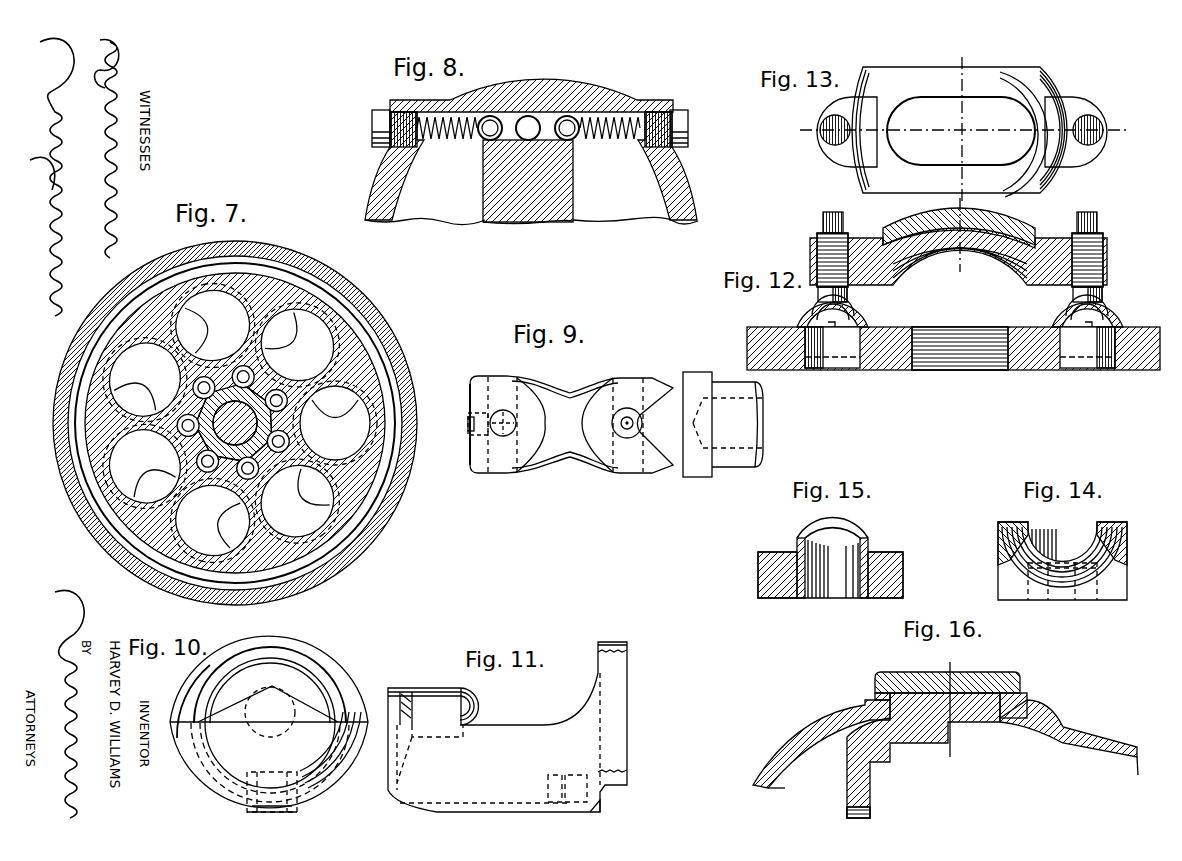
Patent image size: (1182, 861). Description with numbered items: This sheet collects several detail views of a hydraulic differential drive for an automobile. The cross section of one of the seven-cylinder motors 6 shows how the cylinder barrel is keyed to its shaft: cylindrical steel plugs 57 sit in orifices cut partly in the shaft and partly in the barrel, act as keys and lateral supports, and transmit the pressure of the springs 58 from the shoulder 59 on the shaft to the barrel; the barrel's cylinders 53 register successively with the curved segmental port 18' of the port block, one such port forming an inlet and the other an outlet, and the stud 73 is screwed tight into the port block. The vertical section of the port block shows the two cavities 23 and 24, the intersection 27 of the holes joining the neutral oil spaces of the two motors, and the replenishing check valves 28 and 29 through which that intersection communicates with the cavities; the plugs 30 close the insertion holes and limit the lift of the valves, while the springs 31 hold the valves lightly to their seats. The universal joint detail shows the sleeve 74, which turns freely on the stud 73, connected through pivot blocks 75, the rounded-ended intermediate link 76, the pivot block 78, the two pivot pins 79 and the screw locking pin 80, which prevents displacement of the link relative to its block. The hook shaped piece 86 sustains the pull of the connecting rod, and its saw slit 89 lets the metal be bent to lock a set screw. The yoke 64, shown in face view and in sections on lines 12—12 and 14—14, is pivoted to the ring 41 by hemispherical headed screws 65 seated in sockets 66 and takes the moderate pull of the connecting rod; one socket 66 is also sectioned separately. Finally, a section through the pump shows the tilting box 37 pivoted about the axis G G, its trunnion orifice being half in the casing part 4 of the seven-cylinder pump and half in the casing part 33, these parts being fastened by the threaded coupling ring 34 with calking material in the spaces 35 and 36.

In FIG. 7, the seven-cylinder motor 6 is at (377, 324).
In FIG. 7, the segmental port 18' is at (145, 380).
In FIG. 7, the cylinder 53 is at (210, 545).
In FIG. 7, the cylindrical steel plug 57 is at (284, 443).
In FIG. 7, the spring 58 is at (198, 386).
In FIG. 7, the shoulder 59 is at (183, 432).
In FIG. 7, the stud 73 is at (233, 423).
In FIG. 8, the cavity 23 is at (519, 149).
In FIG. 8, the cavity 24 is at (531, 168).
In FIG. 8, the intersection 27 is at (528, 128).
In FIG. 8, the replenishing check valve 28 is at (486, 140).
In FIG. 8, the replenishing check valve 29 is at (584, 140).
In FIG. 8, the plug 30 is at (372, 124).
In FIG. 8, the spring 31 is at (448, 140).
In FIG. 9, the sleeve 74 is at (723, 424).
In FIG. 9, the pivot block 75 is at (655, 390).
In FIG. 9, the intermediate connection 76 is at (571, 424).
In FIG. 9, the pivot block 78 is at (470, 390).
In FIG. 9, the pivot pin 79 is at (512, 420).
In FIG. 9, the screw locking pin 80 is at (468, 420).
In FIG. 10, the hook shaped piece 86 is at (269, 724).
In FIG. 11, the hook shaped piece 86 is at (507, 727).
In FIG. 11, the saw slit 89 is at (600, 803).
In FIG. 13, the section line 12 is at (964, 132).
In FIG. 13, the section line 14 is at (963, 128).
In FIG. 12, the section line 14 is at (963, 239).
In FIG. 13, the yoke 64 is at (991, 170).
In FIG. 12, the yoke 64 is at (1012, 232).
In FIG. 14, the yoke 64 is at (1127, 562).
In FIG. 13, the hemispherical headed screw 65 is at (830, 140).
In FIG. 12, the hemispherical headed screw 65 is at (823, 221).
In FIG. 12, the ring 41 is at (1015, 370).
In FIG. 12, the socket 66 is at (866, 310).
In FIG. 15, the socket 66 is at (868, 553).
In FIG. 16, the pump casing part 33 is at (838, 723).
In FIG. 16, the threaded coupling ring 34 is at (896, 668).
In FIG. 16, the calking space 35 is at (875, 696).
In FIG. 16, the calking space 36 is at (1022, 697).
In FIG. 16, the tilting box 37 is at (855, 772).
In FIG. 16, the seven-cylinder pump 4 is at (1068, 734).
In FIG. 16, the axis G G is at (952, 712).